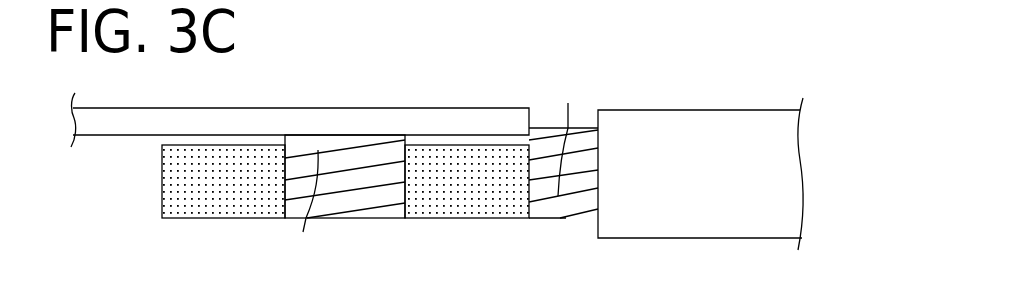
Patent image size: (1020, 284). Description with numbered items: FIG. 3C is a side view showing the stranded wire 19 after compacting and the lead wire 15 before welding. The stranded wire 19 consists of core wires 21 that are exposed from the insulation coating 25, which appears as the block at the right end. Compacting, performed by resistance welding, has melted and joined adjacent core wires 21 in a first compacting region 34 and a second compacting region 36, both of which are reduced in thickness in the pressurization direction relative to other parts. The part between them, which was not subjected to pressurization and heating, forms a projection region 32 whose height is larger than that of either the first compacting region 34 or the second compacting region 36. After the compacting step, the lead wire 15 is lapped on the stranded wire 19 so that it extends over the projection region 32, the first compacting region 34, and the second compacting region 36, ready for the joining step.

The lead wire 15 is at (337, 108).
The stranded wire 19 is at (632, 110).
The core wires 21 is at (332, 192).
The insulation coating 25 is at (688, 110).
The projection region 32 is at (345, 218).
The first compacting region 34 is at (225, 218).
The second compacting region 36 is at (467, 218).